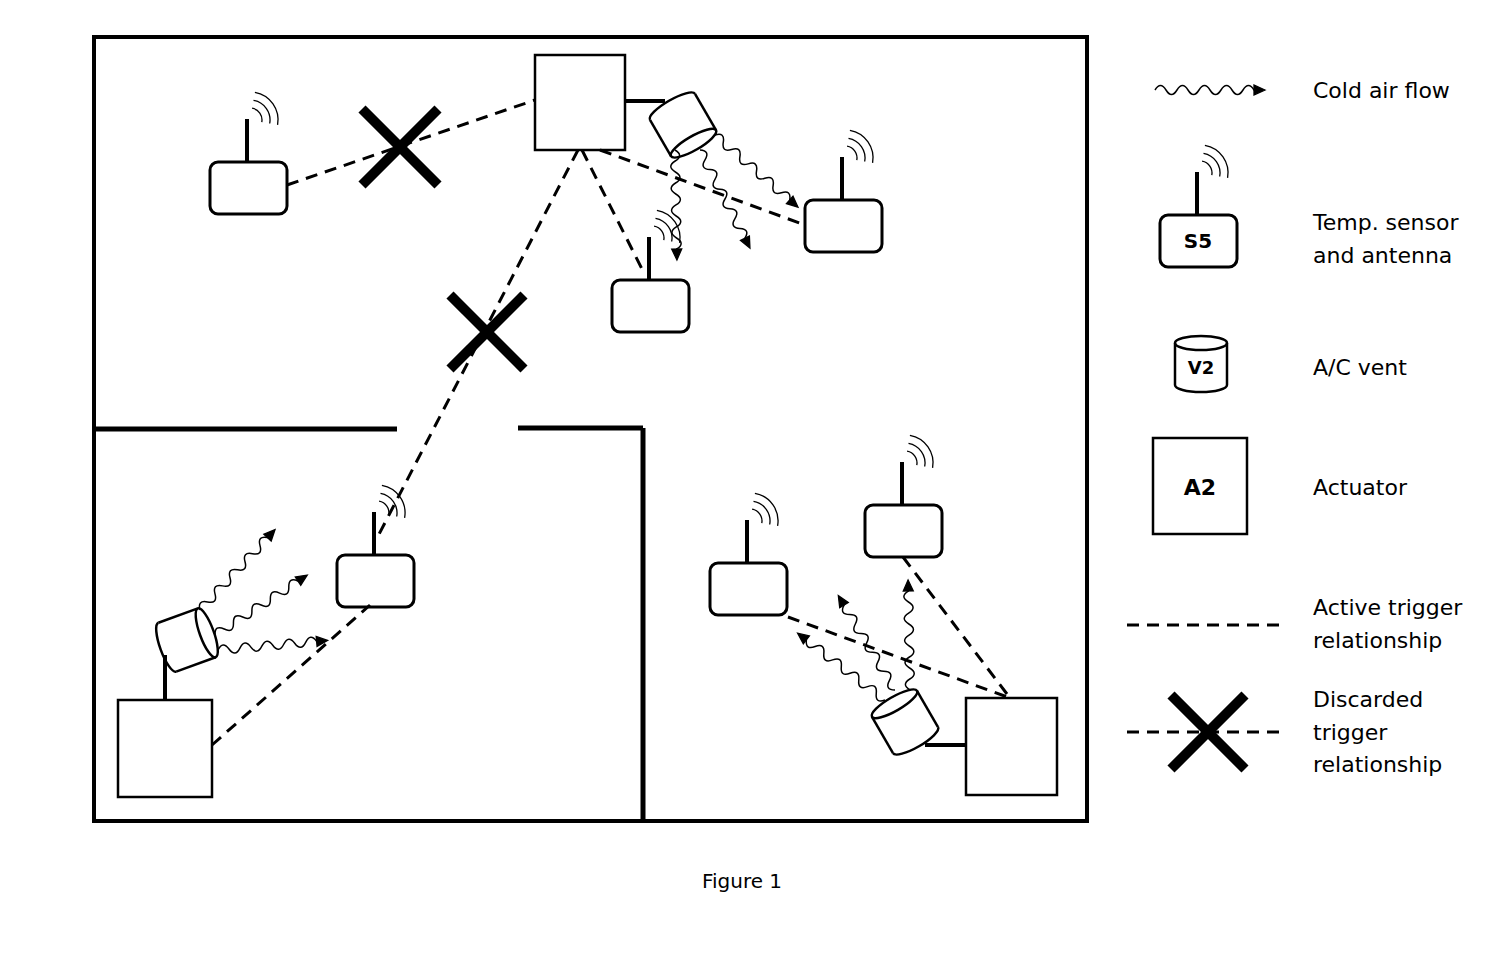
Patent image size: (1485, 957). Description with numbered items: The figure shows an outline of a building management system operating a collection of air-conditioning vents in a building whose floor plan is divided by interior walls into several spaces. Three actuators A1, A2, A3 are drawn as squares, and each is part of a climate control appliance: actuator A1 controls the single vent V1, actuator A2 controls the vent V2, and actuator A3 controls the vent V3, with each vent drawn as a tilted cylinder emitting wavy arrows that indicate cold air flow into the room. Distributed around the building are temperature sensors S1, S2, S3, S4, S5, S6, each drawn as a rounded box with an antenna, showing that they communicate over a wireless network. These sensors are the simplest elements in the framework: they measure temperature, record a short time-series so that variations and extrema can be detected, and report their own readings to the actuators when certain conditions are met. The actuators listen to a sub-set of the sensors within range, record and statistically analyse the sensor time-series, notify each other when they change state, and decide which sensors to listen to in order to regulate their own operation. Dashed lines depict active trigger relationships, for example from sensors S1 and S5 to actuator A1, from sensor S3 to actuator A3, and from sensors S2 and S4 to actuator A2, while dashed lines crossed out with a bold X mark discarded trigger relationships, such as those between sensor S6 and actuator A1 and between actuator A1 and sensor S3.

The actuator A1 is at (600, 102).
The actuator A2 is at (991, 746).
The actuator A3 is at (165, 726).
The A/C vent V1 is at (723, 174).
The A/C vent V2 is at (868, 669).
The A/C vent V3 is at (240, 600).
The sensor S1 is at (650, 271).
The sensor S2 is at (748, 554).
The sensor S3 is at (375, 546).
The sensor S4 is at (903, 496).
The sensor S5 is at (843, 191).
The sensor S6 is at (248, 153).